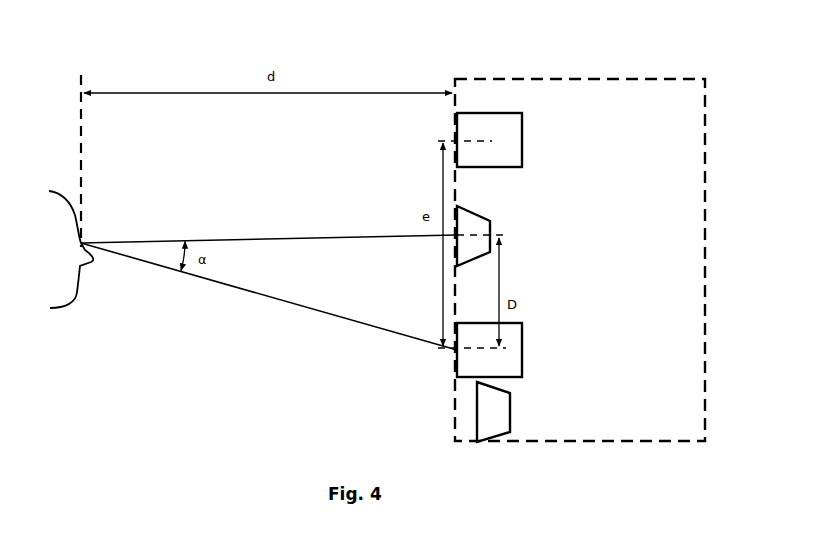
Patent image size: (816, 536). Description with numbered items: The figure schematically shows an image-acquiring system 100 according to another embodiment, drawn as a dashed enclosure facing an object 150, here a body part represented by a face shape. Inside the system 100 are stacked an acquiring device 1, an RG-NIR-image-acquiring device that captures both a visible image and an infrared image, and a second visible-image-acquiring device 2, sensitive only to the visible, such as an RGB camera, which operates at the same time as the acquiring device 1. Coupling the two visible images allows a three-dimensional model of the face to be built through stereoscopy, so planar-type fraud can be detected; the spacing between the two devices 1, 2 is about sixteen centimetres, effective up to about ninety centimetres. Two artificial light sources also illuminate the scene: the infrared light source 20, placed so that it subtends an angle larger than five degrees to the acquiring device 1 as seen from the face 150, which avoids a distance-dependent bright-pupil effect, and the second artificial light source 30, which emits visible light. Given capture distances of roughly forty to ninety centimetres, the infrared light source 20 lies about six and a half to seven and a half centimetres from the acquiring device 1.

The acquiring system 100 is at (547, 78).
The object 150 is at (53, 190).
The visible-image-acquiring device 2 is at (520, 142).
The infrared light source 20 is at (490, 226).
The acquiring device 1 is at (515, 355).
The second artificial light source 30 is at (493, 412).